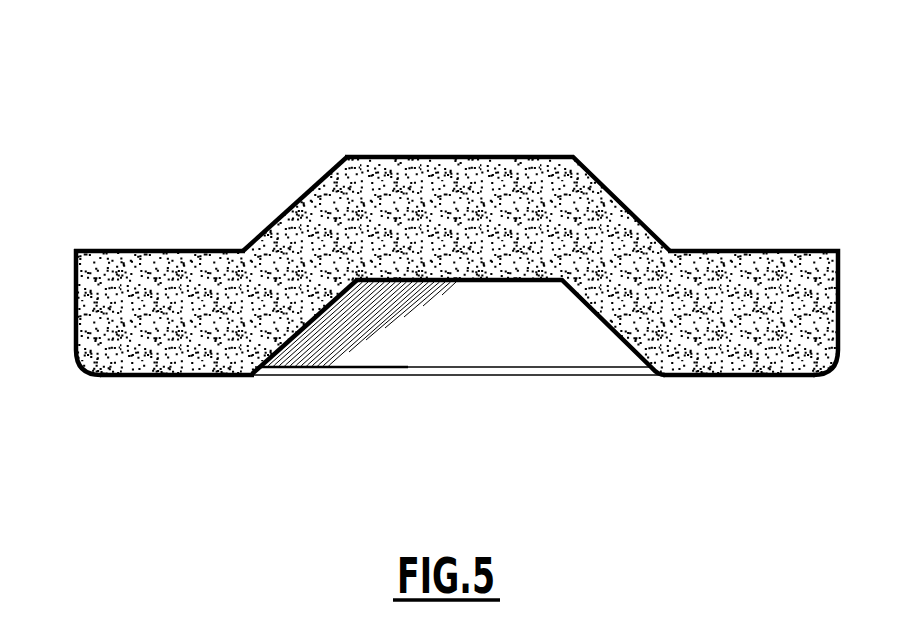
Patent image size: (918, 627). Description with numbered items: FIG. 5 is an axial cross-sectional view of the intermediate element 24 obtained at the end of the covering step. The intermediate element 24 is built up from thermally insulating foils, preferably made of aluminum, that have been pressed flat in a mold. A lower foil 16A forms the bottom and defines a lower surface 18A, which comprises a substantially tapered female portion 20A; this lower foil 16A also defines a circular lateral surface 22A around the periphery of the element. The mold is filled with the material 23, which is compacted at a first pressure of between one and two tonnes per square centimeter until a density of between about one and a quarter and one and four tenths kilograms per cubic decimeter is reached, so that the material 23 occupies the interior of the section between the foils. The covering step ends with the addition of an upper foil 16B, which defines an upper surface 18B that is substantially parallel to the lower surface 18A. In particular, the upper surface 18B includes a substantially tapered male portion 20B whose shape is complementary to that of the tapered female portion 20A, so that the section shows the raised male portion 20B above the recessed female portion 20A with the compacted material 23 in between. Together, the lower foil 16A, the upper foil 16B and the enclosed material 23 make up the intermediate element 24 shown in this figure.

The lower foil 16A is at (137, 383).
The upper foil 16B is at (148, 232).
The lower surface 18A is at (240, 376).
The upper surface 18B is at (205, 250).
The tapered female portion 20A is at (470, 308).
The tapered male portion 20B is at (462, 134).
The circular lateral surface 22A is at (76, 299).
The material 23 is at (729, 348).
The intermediate element 24 is at (778, 218).